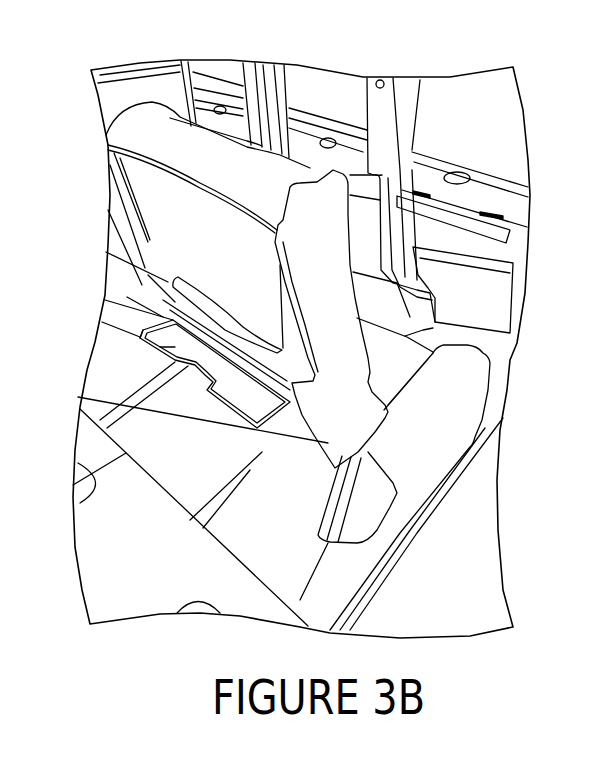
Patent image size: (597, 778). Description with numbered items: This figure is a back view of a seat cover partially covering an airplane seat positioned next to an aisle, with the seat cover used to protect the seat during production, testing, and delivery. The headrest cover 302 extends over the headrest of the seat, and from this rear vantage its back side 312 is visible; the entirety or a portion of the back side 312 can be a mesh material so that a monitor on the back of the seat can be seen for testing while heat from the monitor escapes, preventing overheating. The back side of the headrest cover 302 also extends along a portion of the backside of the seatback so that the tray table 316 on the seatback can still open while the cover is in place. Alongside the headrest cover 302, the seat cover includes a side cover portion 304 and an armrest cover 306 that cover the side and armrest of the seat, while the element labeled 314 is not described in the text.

The headrest cover 302 is at (300, 172).
The side cover portion 304 is at (148, 397).
The armrest cover 306 is at (430, 383).
The back side of headrest cover 312 is at (130, 225).
The seat base 314 is at (318, 537).
The tray table 316 is at (173, 347).